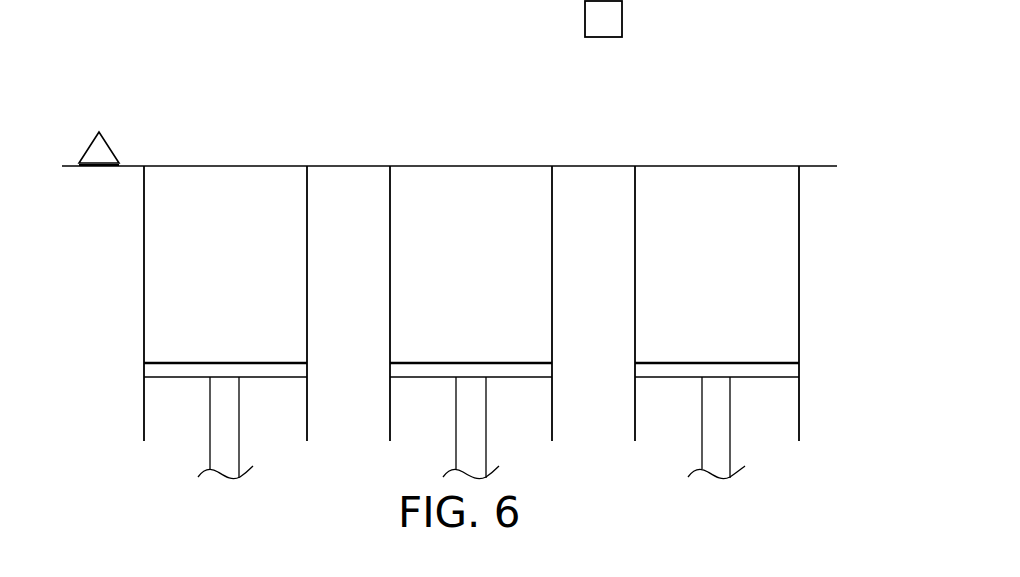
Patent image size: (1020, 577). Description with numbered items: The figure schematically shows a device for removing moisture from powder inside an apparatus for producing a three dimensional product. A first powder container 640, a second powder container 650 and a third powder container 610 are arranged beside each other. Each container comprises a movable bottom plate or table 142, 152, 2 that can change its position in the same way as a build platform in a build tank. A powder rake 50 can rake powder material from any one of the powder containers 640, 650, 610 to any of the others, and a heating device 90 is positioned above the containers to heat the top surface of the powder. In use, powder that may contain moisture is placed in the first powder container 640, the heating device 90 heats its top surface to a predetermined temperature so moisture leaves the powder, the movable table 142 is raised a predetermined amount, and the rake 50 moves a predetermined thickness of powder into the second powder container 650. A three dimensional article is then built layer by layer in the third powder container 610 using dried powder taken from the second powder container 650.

The movable bottom plate or table 2 is at (757, 369).
The powder rake 50 is at (103, 155).
The heating device 90 is at (609, 15).
The movable bottom plate or table 142 is at (172, 369).
The movable bottom plate or table 152 is at (510, 369).
The third powder container 610 is at (634, 277).
The first powder container 640 is at (143, 280).
The second powder container 650 is at (388, 277).